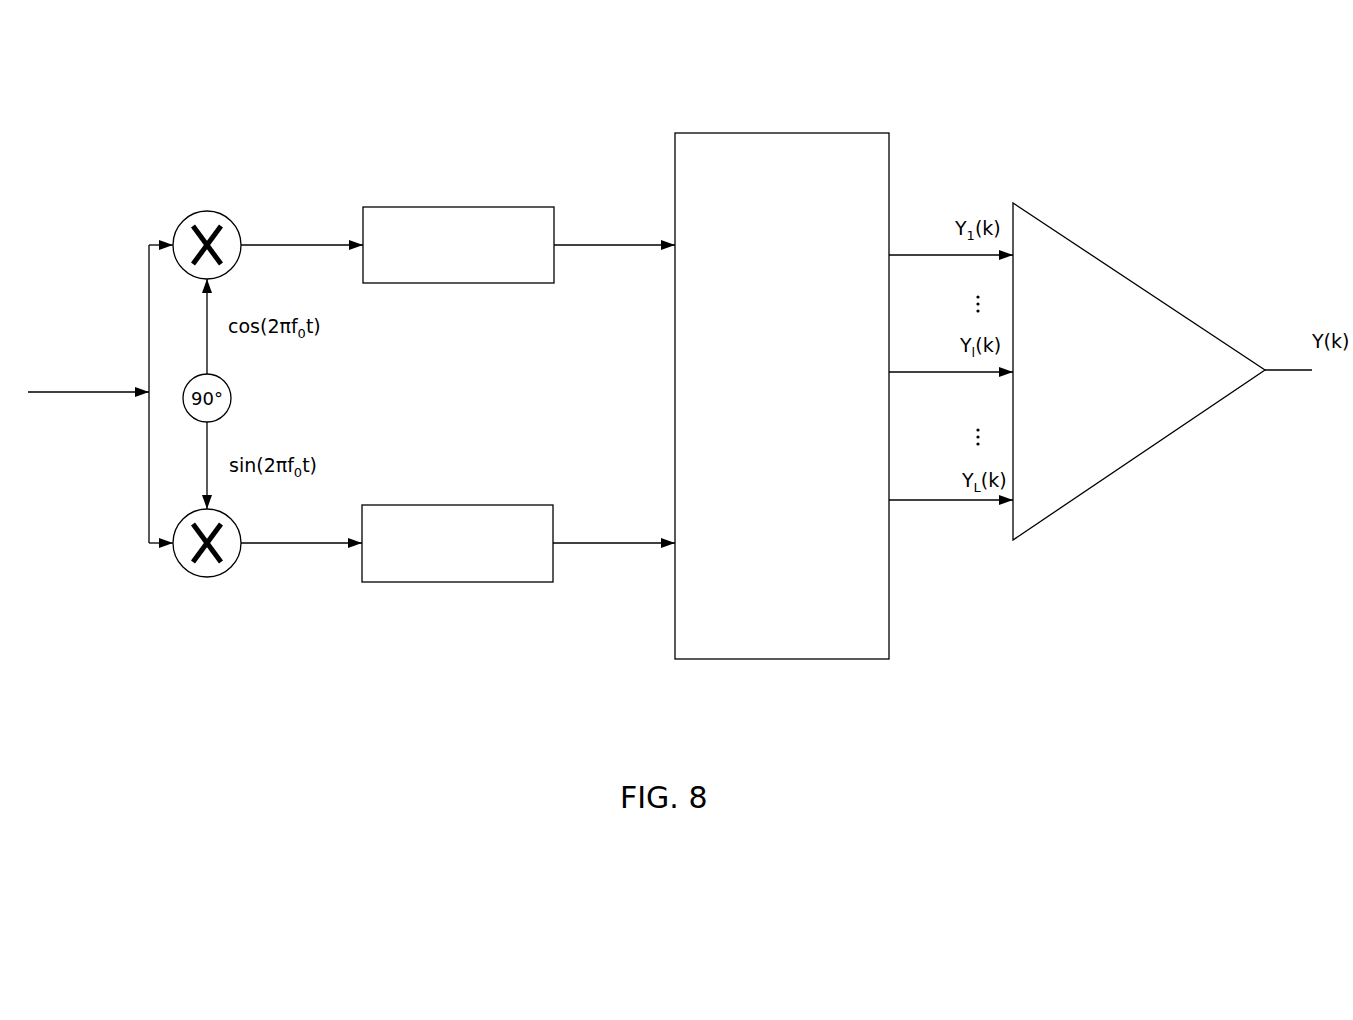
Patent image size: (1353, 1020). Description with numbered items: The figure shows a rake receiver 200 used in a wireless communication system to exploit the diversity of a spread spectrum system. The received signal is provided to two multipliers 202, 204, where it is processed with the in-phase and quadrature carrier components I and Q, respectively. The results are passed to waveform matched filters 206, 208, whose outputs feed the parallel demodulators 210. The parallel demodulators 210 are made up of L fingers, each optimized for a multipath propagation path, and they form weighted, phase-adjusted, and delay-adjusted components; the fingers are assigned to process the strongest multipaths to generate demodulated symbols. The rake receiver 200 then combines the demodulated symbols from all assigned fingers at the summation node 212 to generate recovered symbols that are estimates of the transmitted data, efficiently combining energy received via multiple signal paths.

The rake receiver 200 is at (248, 135).
The multiplier 202 is at (231, 231).
The multiplier 204 is at (229, 570).
The waveform matched filter 206 is at (492, 207).
The waveform matched filter 208 is at (487, 505).
The parallel demodulators 210 is at (780, 133).
The summation node 212 is at (1071, 245).